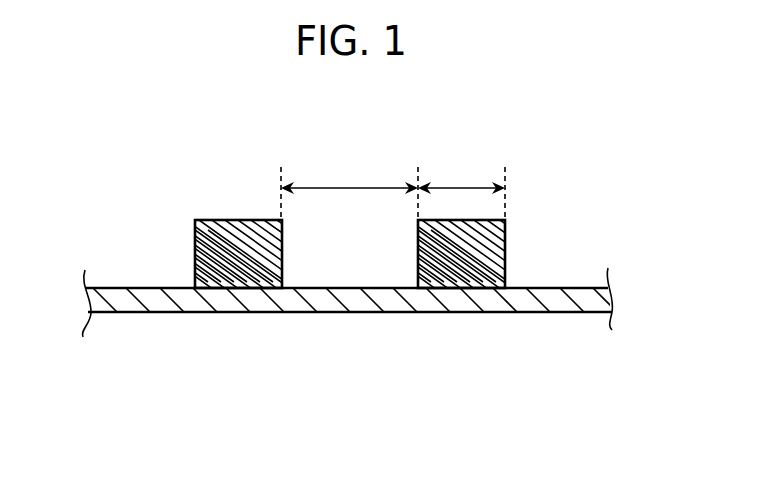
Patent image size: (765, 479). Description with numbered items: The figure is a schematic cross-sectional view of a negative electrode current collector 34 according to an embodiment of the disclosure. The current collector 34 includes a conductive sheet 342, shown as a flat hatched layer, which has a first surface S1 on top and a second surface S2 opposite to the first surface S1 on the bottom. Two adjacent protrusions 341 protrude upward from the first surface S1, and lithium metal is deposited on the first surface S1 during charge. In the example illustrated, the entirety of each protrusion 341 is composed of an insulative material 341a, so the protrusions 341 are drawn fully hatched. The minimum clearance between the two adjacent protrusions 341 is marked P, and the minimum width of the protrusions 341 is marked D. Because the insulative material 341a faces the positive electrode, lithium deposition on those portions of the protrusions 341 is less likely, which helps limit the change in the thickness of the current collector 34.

The negative electrode current collector 34 is at (400, 99).
The protrusion 341 is at (229, 243).
The insulative material 341a is at (242, 256).
The conductive sheet 342 is at (568, 297).
The first surface S1 is at (147, 288).
The second surface S2 is at (150, 312).
The minimum clearance P is at (349, 190).
The minimum width D is at (450, 187).